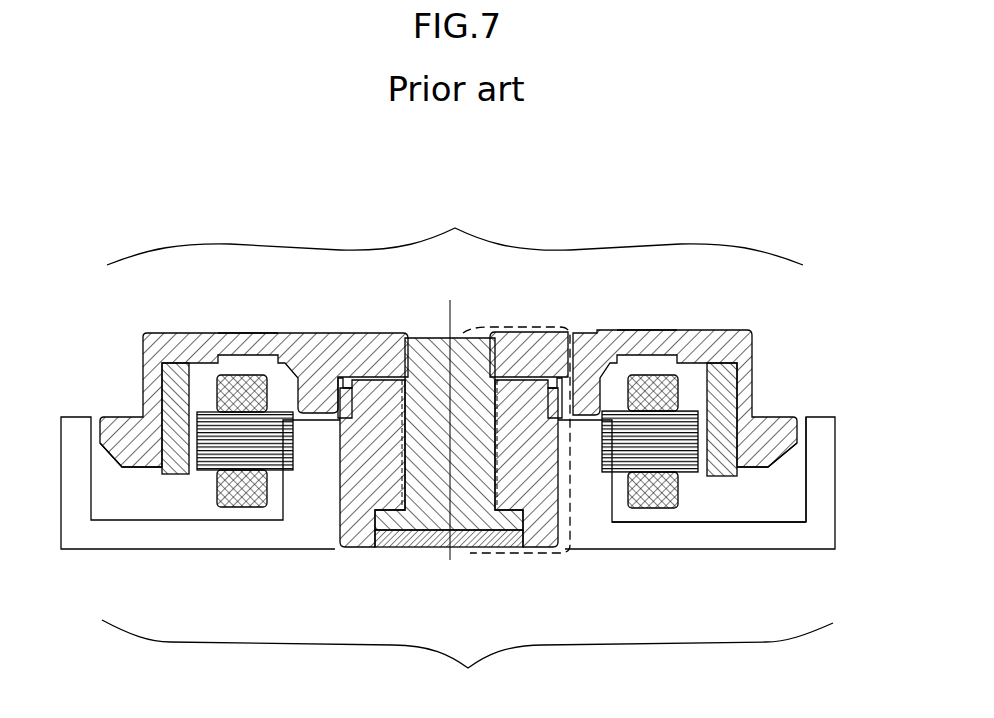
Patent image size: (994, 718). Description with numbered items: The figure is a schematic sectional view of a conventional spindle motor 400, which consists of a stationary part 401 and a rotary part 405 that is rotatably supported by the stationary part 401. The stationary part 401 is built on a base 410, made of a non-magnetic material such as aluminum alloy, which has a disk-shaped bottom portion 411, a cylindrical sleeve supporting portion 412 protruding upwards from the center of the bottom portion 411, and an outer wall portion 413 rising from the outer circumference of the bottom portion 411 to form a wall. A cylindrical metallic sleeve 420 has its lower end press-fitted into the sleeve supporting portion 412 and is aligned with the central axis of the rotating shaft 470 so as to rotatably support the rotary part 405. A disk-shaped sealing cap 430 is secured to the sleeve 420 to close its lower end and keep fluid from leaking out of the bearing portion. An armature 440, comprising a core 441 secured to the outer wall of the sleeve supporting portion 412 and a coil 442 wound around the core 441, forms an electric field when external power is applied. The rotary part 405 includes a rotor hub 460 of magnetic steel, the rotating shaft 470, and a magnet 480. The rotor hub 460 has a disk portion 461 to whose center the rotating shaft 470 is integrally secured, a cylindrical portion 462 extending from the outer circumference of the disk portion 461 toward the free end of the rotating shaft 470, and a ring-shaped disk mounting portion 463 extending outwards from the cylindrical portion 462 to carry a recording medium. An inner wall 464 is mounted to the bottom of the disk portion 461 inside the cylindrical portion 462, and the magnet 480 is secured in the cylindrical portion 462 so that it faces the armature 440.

The spindle motor 400 is at (182, 192).
The stationary part 401 is at (467, 661).
The rotary part 405 is at (455, 233).
The base 410 is at (106, 553).
The bottom portion 411 is at (770, 541).
The sleeve supporting portion 412 is at (586, 503).
The outer wall portion 413 is at (818, 498).
The sleeve 420 is at (353, 553).
The sealing cap 430 is at (442, 556).
The armature 440 is at (213, 497).
The core 441 is at (685, 466).
The coil 442 is at (655, 507).
The rotor hub 460 is at (345, 327).
The disk portion 461 is at (528, 343).
The cylindrical portion 462 is at (183, 333).
The disk mounting portion 463 is at (763, 420).
The inner wall 464 is at (316, 398).
The rotating shaft 470 is at (439, 328).
The magnet 480 is at (698, 372).